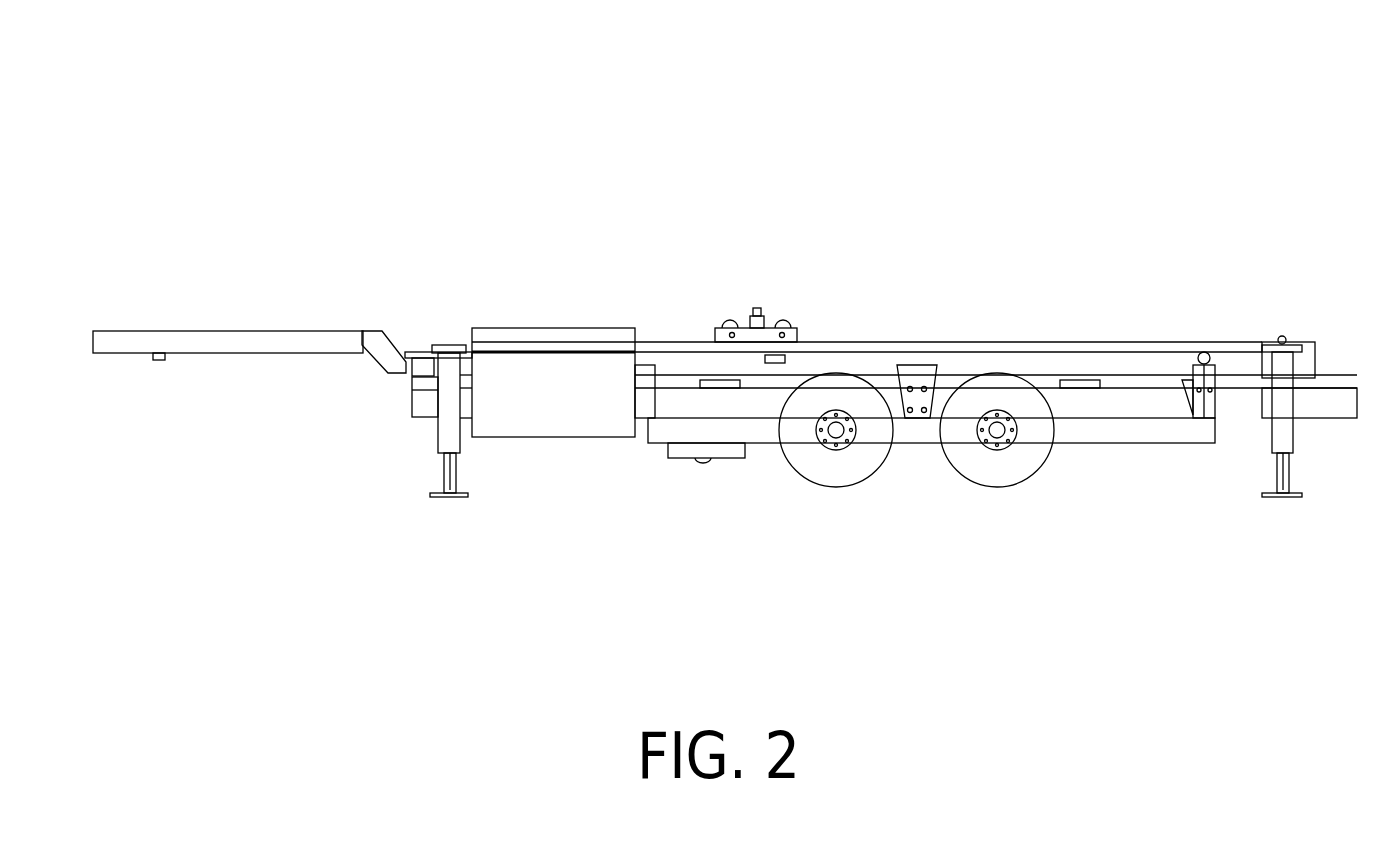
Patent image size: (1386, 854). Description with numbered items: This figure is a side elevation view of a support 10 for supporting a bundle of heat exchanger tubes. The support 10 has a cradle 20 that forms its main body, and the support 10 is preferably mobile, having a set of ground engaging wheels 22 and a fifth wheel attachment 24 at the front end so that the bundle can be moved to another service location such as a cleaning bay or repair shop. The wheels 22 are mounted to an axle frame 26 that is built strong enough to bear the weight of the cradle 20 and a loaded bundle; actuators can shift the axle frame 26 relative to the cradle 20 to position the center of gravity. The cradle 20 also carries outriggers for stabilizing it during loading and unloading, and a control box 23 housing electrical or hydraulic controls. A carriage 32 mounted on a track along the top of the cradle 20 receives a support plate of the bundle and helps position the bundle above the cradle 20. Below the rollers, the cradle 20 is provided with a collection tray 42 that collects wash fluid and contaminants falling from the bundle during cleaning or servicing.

The support 10 is at (268, 216).
The cradle 20 is at (295, 340).
The ground engaging wheels 22 is at (997, 432).
The control box 23 is at (583, 418).
The fifth wheel attachment 24 is at (152, 358).
The axle frame 26 is at (715, 428).
The carriage 32 is at (760, 330).
The collection tray 42 is at (1122, 415).